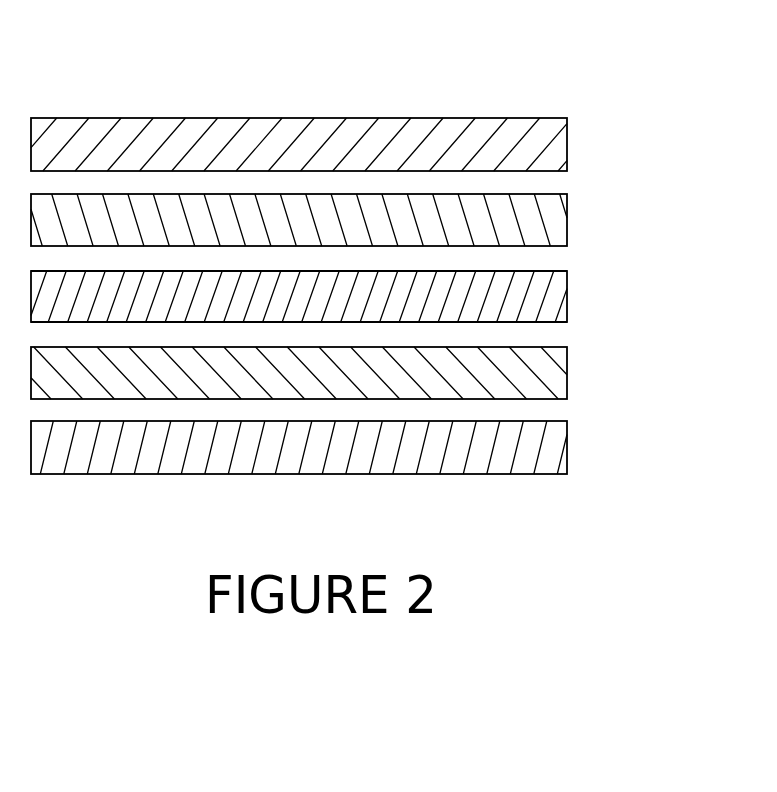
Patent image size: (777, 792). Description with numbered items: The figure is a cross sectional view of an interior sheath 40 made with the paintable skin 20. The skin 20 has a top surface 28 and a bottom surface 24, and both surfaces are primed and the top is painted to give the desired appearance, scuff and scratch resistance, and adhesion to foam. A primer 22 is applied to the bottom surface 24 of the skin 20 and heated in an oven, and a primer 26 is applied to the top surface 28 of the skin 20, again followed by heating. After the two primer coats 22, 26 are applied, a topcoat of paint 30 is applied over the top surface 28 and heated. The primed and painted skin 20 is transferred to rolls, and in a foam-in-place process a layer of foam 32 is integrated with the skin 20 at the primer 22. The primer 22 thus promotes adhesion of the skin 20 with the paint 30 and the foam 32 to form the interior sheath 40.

The interior sheath 40 is at (460, 88).
The topcoat of paint 30 is at (568, 138).
The primer 26 is at (568, 220).
The skin 20 is at (568, 303).
The top surface 28 is at (535, 271).
The bottom surface 24 is at (533, 322).
The primer 22 is at (568, 383).
The layer of foam 32 is at (568, 450).